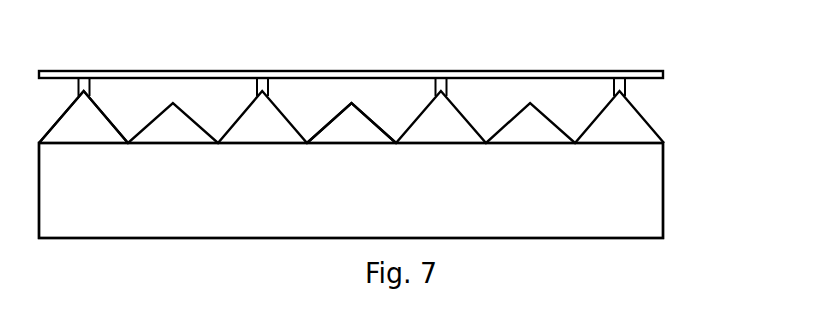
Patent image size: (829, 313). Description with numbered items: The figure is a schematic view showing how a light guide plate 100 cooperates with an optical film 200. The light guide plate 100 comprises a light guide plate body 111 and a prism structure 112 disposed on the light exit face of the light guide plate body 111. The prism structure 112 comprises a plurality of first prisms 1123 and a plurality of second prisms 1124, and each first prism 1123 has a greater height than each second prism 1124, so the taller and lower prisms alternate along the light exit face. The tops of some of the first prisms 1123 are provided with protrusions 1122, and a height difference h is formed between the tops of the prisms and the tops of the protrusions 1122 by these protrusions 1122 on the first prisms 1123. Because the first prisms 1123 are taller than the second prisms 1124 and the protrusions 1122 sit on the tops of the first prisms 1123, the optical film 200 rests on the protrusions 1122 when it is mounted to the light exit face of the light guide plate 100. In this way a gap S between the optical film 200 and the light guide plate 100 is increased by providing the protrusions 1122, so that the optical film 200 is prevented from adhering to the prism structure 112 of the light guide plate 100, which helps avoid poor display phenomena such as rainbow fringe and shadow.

The light guide plate 100 is at (711, 100).
The light guide plate body 111 is at (648, 192).
The prism structure 112 is at (646, 101).
The protrusions 1122 is at (263, 79).
The first prisms 1123 is at (76, 125).
The second prisms 1124 is at (352, 128).
The optical film 200 is at (651, 74).
The gap S is at (491, 97).
The height difference h is at (132, 92).